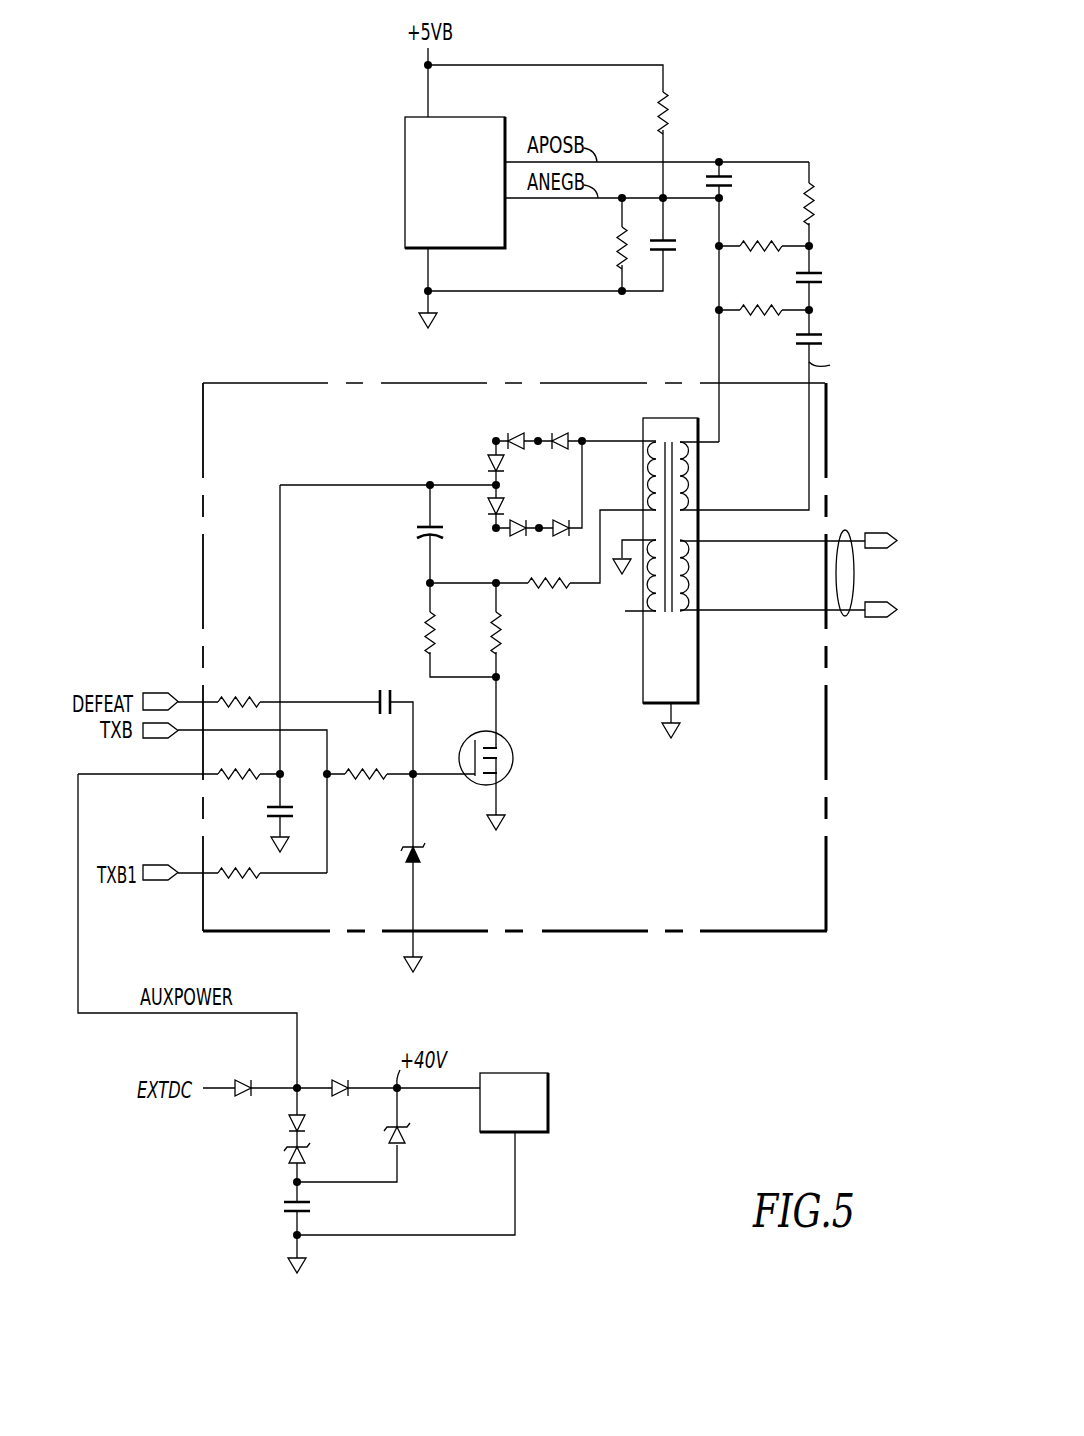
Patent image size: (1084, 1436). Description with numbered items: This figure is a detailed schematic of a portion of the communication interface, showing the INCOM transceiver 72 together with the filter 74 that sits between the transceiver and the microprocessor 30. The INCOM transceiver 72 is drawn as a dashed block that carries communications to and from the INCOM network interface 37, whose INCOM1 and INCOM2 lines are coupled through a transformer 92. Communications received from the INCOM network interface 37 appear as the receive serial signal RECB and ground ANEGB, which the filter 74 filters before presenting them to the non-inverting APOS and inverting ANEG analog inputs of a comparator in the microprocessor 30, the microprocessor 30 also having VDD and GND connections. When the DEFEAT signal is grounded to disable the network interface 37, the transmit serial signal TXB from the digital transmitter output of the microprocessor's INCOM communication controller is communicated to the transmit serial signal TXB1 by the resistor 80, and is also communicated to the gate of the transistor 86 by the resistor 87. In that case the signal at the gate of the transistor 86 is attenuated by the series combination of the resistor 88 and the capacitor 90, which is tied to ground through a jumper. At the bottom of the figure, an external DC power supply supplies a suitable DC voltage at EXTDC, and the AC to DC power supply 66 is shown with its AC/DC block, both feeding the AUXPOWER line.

The microprocessor 30 is at (405, 174).
The filter 74 is at (830, 153).
The INCOM transceiver 72 is at (757, 932).
The transformer 92 is at (698, 655).
The INCOM network interface 37 is at (847, 614).
The resistor 88 is at (255, 698).
The capacitor 90 is at (381, 692).
The resistor 80 is at (238, 880).
The resistor 87 is at (355, 777).
The transistor 86 is at (513, 758).
The AC to DC power supply 66 is at (535, 1133).